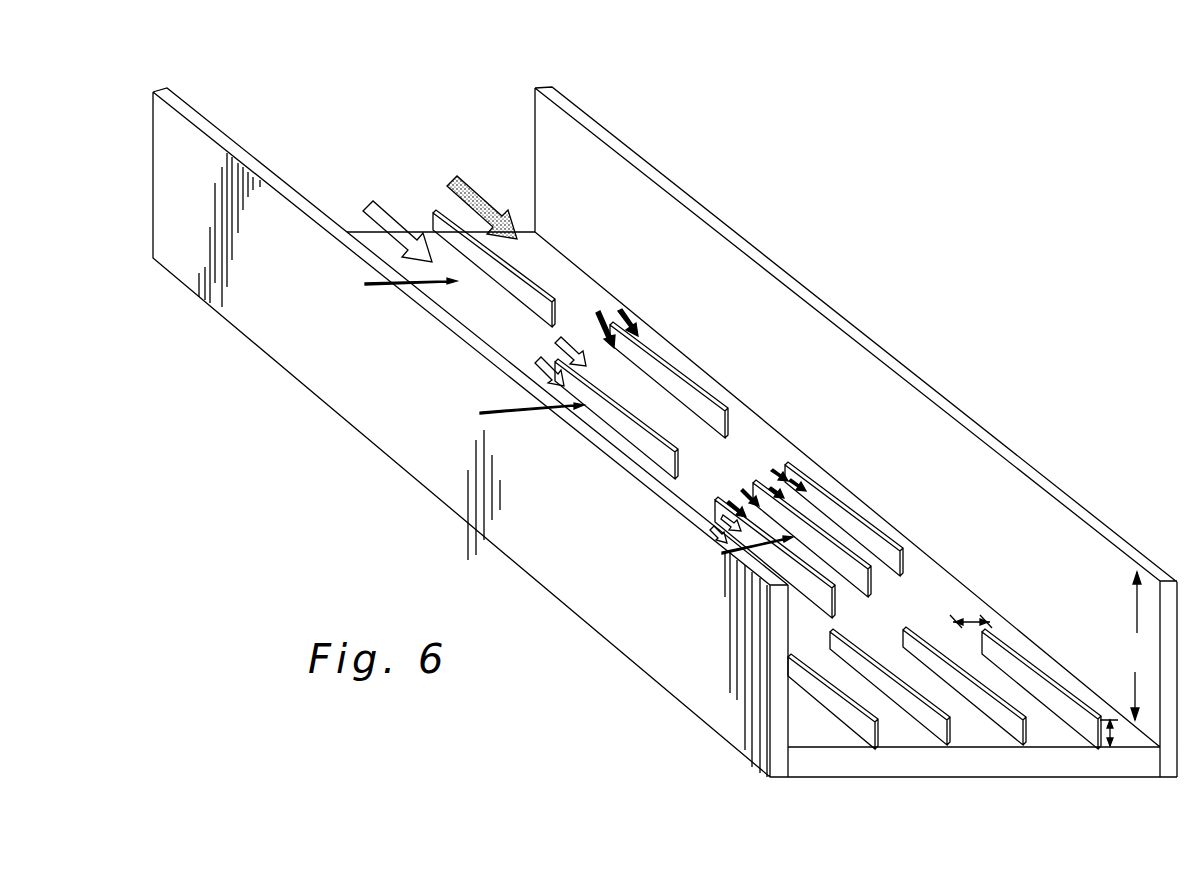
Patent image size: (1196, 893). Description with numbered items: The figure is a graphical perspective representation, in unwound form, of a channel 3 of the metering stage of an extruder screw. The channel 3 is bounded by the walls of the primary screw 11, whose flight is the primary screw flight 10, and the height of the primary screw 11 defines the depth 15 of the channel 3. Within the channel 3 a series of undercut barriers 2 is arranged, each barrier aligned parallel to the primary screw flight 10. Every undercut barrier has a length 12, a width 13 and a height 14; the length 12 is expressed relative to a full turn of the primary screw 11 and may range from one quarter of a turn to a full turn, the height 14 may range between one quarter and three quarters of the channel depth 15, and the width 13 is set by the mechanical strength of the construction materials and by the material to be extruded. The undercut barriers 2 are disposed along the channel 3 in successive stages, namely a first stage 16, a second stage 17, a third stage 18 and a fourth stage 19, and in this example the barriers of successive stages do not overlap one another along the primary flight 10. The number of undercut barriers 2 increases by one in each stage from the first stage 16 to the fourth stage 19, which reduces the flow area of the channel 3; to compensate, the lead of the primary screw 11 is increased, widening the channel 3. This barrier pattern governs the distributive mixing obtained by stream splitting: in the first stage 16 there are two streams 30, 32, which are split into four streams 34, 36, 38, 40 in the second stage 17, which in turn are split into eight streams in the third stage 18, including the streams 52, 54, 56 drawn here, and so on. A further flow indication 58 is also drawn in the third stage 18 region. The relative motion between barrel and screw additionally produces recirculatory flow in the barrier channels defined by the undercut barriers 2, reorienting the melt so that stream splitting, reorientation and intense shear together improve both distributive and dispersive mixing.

The undercut barriers 2 is at (522, 287).
The channel 3 is at (440, 83).
The primary screw flight 10 is at (762, 489).
The primary screw 11 is at (153, 92).
The length 12 is at (1055, 672).
The width 13 is at (990, 622).
The height 14 is at (1112, 745).
The depth 15 is at (1132, 646).
The first stage 16 is at (365, 284).
The second stage 17 is at (516, 414).
The third stage 18 is at (722, 553).
The fourth stage 19 is at (812, 770).
The stream 30 is at (365, 207).
The stream 32 is at (455, 180).
The stream 34 is at (538, 360).
The stream 36 is at (558, 340).
The stream 38 is at (598, 312).
The stream 40 is at (620, 310).
The stream 52 is at (712, 528).
The stream 54 is at (722, 517).
The stream 56 is at (728, 502).
The flow arrow 58 is at (742, 490).